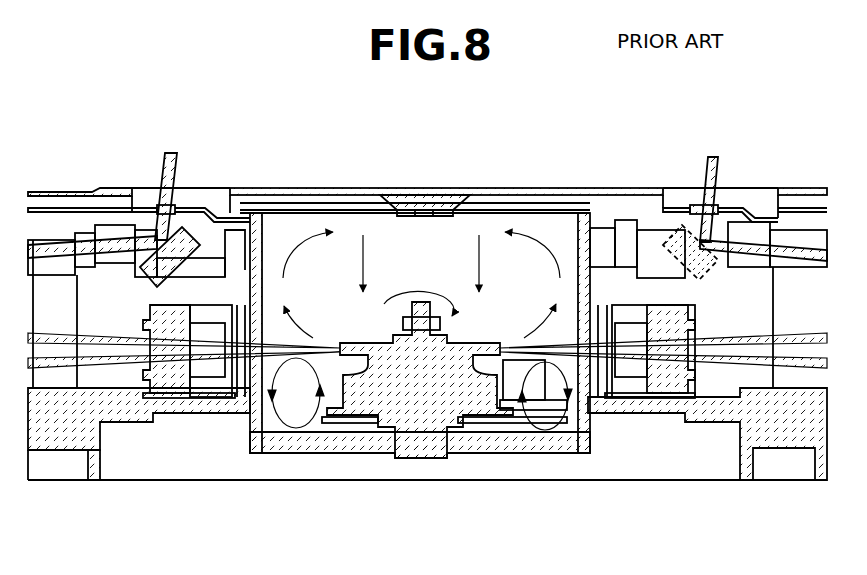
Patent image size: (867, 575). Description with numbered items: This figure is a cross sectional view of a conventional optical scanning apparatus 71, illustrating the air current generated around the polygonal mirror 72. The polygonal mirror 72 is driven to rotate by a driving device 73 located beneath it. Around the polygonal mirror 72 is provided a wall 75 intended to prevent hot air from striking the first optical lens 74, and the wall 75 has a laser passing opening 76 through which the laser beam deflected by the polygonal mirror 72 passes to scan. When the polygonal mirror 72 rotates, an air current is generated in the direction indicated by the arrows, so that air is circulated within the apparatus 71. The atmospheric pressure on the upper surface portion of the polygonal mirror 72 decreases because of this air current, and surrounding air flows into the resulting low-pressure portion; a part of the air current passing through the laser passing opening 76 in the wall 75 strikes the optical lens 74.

The optical scanning apparatus 71 is at (560, 443).
The polygonal mirror 72 is at (372, 350).
The driving device 73 is at (507, 413).
The first optical lens 74 is at (580, 285).
The wall 75 is at (592, 357).
The laser passing opening 76 is at (667, 385).